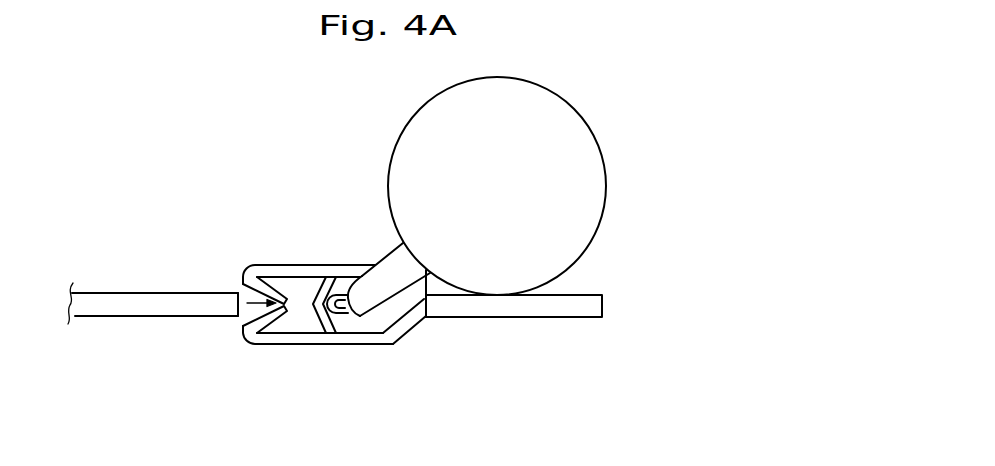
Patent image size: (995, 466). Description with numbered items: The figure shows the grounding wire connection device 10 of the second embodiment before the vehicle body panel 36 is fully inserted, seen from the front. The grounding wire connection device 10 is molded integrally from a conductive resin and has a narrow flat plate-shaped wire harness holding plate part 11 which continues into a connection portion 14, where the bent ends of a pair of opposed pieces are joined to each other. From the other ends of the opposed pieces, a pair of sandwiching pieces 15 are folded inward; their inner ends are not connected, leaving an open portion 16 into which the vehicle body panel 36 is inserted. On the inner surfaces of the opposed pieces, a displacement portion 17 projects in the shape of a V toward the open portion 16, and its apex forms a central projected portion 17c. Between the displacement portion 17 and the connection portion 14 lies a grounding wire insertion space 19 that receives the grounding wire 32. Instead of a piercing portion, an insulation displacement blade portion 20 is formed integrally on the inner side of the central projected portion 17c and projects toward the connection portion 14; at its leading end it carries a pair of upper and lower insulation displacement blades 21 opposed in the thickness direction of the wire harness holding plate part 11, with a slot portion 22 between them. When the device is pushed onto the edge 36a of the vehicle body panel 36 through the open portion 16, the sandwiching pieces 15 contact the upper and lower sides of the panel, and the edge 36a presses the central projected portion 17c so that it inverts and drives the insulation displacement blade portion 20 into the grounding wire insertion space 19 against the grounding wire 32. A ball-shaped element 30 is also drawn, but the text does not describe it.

The grounding wire connection device 10 is at (323, 248).
The wire harness holding plate part 11 is at (556, 317).
The connection portion 14 is at (426, 316).
The sandwiching pieces 15 is at (270, 266).
The open portion 16 is at (240, 292).
The displacement portion 17 is at (300, 282).
The central projected portion 17c is at (298, 334).
The grounding wire insertion space 19 is at (380, 336).
The insulation displacement blade portion 20 is at (338, 292).
The insulation displacement blades 21 is at (345, 294).
The slot portion 22 is at (353, 320).
The ball 30 is at (598, 122).
The grounding wire 32 is at (387, 288).
The vehicle body panel 36 is at (108, 316).
The edge 36a is at (245, 316).